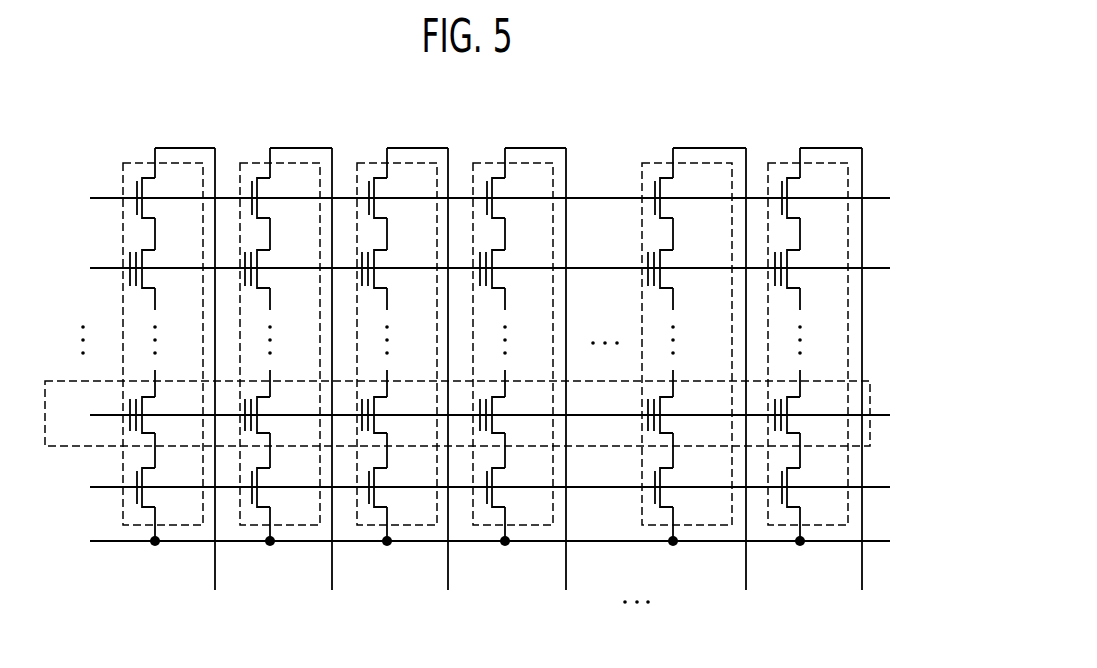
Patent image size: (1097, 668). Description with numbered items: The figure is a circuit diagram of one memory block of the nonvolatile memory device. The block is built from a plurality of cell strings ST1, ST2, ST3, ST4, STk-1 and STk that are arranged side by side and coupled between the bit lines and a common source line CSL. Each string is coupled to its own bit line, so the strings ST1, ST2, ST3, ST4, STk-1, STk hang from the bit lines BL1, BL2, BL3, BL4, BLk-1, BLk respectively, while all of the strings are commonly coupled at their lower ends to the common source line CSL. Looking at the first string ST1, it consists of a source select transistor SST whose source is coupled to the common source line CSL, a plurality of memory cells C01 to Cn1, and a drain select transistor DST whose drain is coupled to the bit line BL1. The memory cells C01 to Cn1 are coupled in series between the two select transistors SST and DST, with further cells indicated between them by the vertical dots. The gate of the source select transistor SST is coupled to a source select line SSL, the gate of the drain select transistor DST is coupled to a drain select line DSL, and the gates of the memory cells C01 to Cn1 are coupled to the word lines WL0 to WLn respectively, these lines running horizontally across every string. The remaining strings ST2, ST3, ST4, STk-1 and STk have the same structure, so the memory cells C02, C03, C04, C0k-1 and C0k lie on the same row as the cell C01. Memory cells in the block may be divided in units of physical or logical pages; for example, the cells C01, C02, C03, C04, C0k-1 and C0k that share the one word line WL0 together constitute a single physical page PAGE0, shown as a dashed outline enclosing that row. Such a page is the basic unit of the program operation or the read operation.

The string ST1 is at (169, 322).
The string ST2 is at (286, 322).
The string ST3 is at (402, 322).
The string ST4 is at (519, 322).
The string STk-1 is at (694, 322).
The string STk is at (815, 322).
The drain select transistor DST is at (165, 196).
The source select transistor SST is at (163, 483).
The memory cell Cn1 is at (159, 265).
The memory cell C01 is at (159, 411).
The memory cell C02 is at (276, 411).
The memory cell C03 is at (393, 411).
The memory cell C04 is at (511, 411).
The memory cell C0k-1 is at (687, 411).
The memory cell C0k is at (808, 411).
The drain select line DSL is at (471, 199).
The word line WLn is at (471, 269).
The word line WL0 is at (471, 416).
The source select line SSL is at (471, 488).
The common source line CSL is at (471, 542).
The bit line BL1 is at (217, 386).
The bit line BL2 is at (334, 386).
The bit line BL3 is at (450, 386).
The bit line BL4 is at (569, 386).
The bit line BLk-1 is at (756, 386).
The bit line BLk is at (866, 386).
The physical page PAGE0 is at (870, 382).